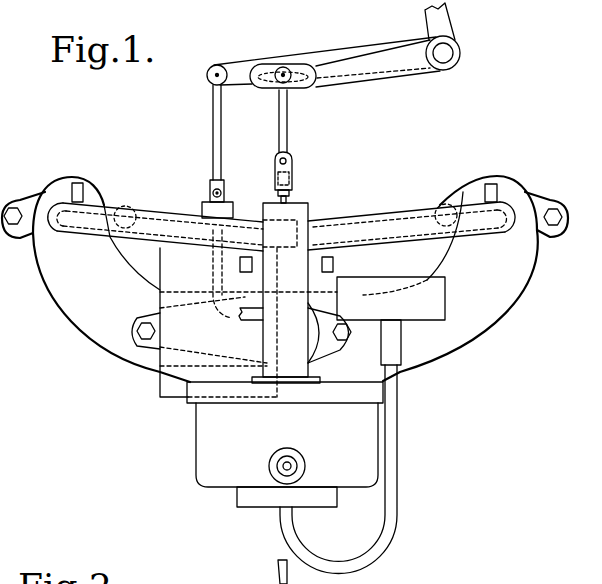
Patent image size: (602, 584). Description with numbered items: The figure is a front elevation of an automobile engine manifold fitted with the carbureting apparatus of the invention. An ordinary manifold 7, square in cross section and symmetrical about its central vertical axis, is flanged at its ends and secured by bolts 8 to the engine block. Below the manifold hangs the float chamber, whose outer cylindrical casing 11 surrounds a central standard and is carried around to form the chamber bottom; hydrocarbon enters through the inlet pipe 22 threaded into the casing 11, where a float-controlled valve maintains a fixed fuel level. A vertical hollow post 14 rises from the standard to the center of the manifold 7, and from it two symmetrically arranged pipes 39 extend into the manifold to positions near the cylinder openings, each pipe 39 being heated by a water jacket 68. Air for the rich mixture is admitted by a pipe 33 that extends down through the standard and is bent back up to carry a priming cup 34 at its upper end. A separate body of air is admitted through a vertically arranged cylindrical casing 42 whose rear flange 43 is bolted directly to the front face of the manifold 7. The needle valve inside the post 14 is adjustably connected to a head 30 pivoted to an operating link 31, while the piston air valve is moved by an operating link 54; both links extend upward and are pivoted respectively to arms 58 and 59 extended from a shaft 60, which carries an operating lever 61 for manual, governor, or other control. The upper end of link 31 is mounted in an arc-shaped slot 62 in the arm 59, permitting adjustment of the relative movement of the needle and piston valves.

The manifold 7 is at (510, 288).
The bolts 8 is at (19, 202).
The cylindrical casing 11 is at (202, 435).
The hollow post 14 is at (300, 211).
The inlet pipe 22 is at (299, 465).
The head 30 is at (291, 182).
The operating link 31 is at (287, 144).
The pipe 33 is at (399, 508).
The priming cup 34 is at (437, 303).
The pipes 39 is at (90, 214).
The cylindrical casing 42 is at (172, 380).
The flange 43 is at (332, 345).
The operating link 54 is at (217, 146).
The arm 58 is at (245, 62).
The arm 59 is at (370, 82).
The shaft 60 is at (447, 58).
The operating lever 61 is at (450, 20).
The arc-shaped slot 62 is at (300, 82).
The water jacket 68 is at (355, 220).